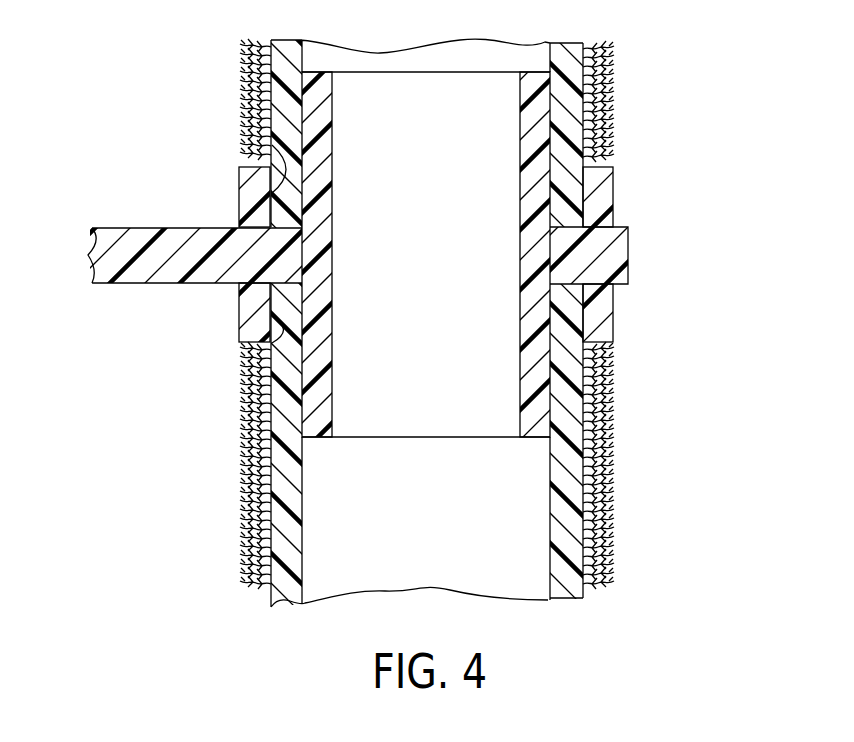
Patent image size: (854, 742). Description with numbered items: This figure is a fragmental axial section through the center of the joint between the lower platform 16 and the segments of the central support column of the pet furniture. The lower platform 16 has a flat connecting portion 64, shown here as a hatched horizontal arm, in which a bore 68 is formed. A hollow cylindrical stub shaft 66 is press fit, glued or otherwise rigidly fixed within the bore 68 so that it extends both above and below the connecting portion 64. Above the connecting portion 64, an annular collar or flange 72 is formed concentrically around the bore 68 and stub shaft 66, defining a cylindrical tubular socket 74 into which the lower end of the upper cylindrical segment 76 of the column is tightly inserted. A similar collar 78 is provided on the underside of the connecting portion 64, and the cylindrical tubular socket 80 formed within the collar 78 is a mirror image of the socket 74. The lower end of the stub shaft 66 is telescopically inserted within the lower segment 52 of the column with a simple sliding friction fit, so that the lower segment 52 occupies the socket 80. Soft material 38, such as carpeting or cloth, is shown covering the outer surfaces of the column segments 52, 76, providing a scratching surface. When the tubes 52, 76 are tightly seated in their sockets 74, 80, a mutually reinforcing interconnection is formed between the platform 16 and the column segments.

The lower platform 16 is at (628, 263).
The soft material 38 is at (605, 95).
The lower segment 52 is at (565, 585).
The connecting portion 64 is at (122, 232).
The stub shaft 66 is at (520, 375).
The bore 68 is at (324, 248).
The collar 72 is at (250, 201).
The tubular socket 74 is at (268, 157).
The upper cylindrical segment 76 is at (242, 78).
The collar 78 is at (247, 308).
The tubular socket 80 is at (273, 342).